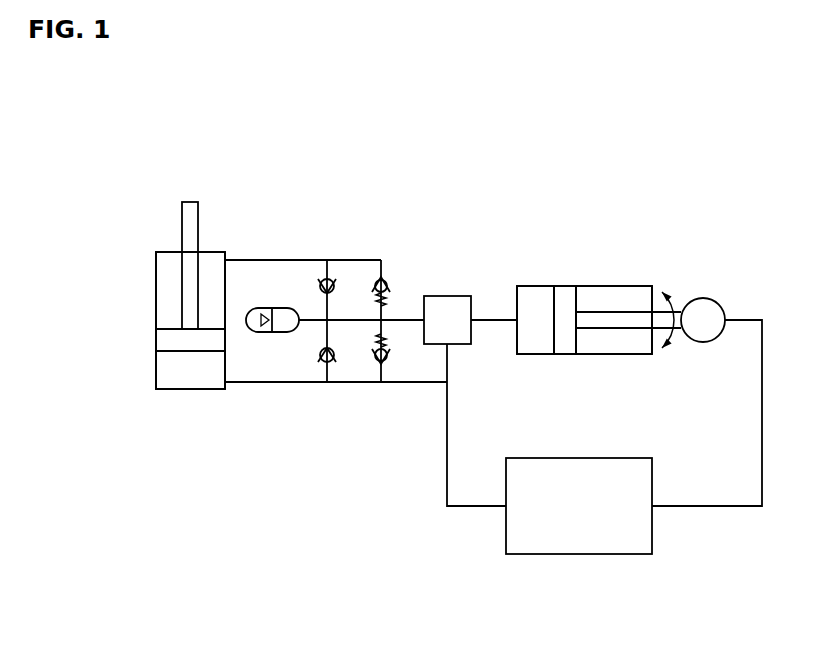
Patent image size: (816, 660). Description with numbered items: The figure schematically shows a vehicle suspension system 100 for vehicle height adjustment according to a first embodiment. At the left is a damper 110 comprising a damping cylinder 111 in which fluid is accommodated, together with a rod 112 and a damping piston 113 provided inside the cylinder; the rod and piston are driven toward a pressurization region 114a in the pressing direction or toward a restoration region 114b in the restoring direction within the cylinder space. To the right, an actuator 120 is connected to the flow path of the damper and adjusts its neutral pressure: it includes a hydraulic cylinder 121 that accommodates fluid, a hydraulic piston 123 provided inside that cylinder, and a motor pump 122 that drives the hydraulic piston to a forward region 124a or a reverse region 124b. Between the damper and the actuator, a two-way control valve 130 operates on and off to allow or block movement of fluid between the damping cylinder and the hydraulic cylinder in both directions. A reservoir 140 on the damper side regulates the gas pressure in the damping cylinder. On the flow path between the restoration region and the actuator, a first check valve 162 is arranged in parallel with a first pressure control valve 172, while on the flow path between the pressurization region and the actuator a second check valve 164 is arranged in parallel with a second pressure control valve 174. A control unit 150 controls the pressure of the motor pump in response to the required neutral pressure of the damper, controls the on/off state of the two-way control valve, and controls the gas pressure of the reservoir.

The vehicle suspension system 100 is at (735, 117).
The damper 110 is at (159, 188).
The damping cylinder 111 is at (156, 268).
The rod 112 is at (188, 225).
The damping piston 113 is at (160, 341).
The pressurization region 114a is at (160, 372).
The restoration region 114b is at (160, 310).
The actuator 120 is at (694, 268).
The hydraulic cylinder 121 is at (608, 285).
The motor pump 122 is at (720, 303).
The hydraulic piston 123 is at (563, 300).
The forward region 124a is at (530, 300).
The reverse region 124b is at (630, 300).
The two-way control valve 130 is at (447, 296).
The reservoir 140 is at (266, 335).
The control unit 150 is at (575, 554).
The first check valve 162 is at (317, 288).
The second check valve 164 is at (322, 368).
The first pressure control valve 172 is at (385, 273).
The second pressure control valve 174 is at (385, 368).